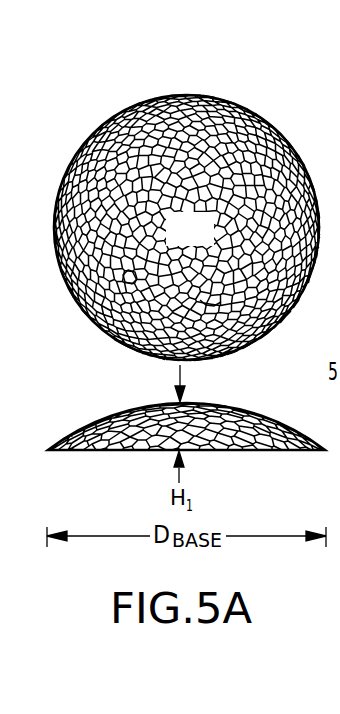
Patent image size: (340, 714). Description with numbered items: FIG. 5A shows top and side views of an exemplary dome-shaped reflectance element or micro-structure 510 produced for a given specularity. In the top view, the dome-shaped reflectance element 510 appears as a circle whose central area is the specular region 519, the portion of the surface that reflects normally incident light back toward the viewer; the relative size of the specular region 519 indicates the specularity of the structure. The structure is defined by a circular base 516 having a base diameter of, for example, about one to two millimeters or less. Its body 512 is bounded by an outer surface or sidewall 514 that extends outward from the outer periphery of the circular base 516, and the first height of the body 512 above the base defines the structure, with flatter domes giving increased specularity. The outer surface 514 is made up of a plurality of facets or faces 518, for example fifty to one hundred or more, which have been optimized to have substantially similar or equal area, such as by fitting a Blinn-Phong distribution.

The dome-shaped reflectance element 510 is at (286, 86).
The body 512 is at (77, 411).
The outer surface or sidewall 514 is at (119, 291).
The circular base 516 is at (294, 142).
The facets/faces 518 is at (203, 303).
The specular region 519 is at (208, 242).